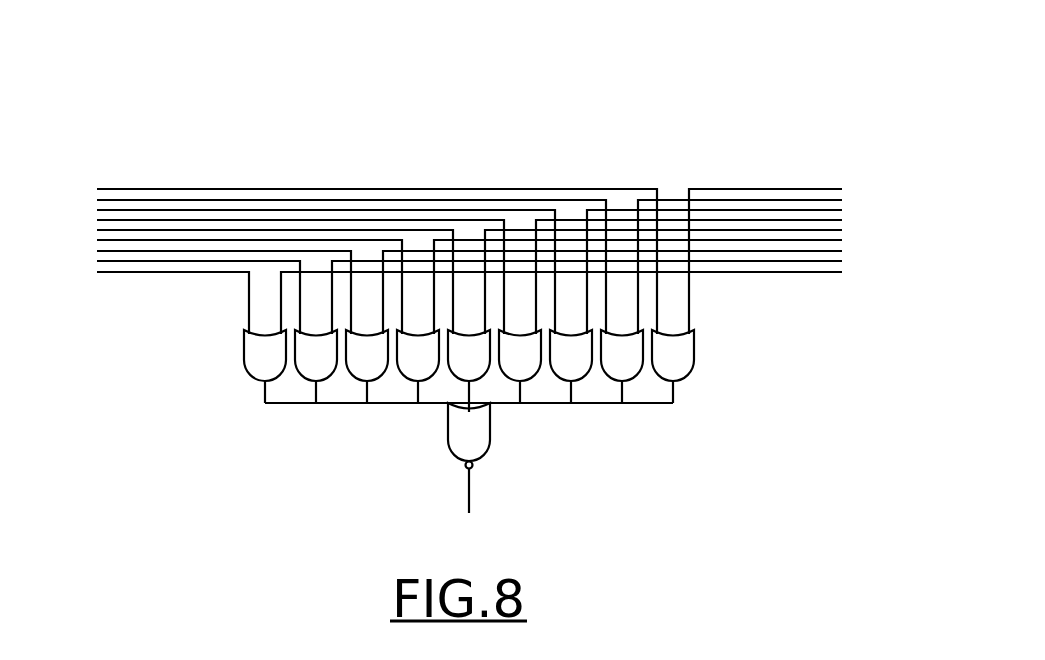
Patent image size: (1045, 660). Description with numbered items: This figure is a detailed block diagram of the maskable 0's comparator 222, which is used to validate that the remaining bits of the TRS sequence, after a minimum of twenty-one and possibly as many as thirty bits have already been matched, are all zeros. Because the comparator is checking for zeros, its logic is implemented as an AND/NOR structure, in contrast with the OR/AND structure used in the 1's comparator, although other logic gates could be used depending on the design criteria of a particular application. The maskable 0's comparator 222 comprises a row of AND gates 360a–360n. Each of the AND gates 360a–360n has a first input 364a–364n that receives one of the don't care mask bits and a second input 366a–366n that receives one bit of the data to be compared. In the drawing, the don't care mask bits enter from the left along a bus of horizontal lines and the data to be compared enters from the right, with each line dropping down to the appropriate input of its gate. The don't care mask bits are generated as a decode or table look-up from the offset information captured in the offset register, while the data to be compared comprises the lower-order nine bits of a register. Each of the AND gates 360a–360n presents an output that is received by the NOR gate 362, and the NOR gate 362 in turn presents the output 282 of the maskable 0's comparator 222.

The maskable 0's comparator 222 is at (113, 48).
The input 364a is at (247, 331).
The input 366a is at (282, 329).
The AND gate 360a is at (242, 353).
The input 364n is at (657, 331).
The input 366n is at (692, 330).
The AND gate 360n is at (697, 352).
The NOR gate 362 is at (447, 425).
The output 282 is at (467, 484).